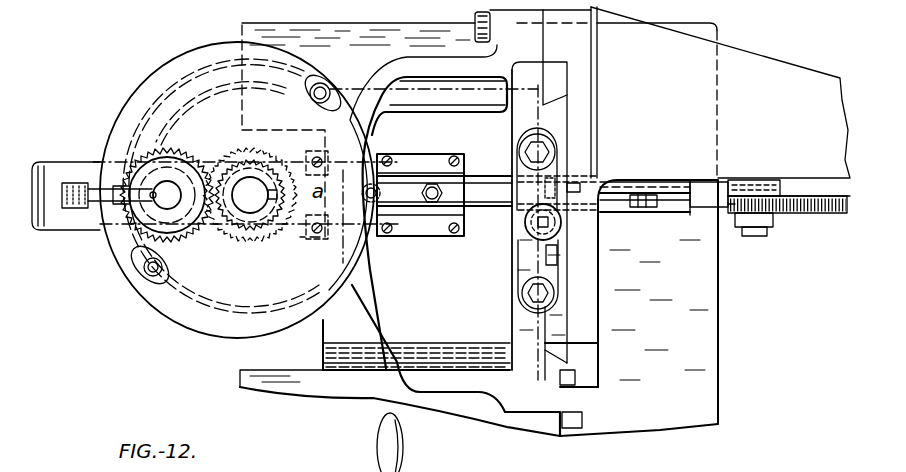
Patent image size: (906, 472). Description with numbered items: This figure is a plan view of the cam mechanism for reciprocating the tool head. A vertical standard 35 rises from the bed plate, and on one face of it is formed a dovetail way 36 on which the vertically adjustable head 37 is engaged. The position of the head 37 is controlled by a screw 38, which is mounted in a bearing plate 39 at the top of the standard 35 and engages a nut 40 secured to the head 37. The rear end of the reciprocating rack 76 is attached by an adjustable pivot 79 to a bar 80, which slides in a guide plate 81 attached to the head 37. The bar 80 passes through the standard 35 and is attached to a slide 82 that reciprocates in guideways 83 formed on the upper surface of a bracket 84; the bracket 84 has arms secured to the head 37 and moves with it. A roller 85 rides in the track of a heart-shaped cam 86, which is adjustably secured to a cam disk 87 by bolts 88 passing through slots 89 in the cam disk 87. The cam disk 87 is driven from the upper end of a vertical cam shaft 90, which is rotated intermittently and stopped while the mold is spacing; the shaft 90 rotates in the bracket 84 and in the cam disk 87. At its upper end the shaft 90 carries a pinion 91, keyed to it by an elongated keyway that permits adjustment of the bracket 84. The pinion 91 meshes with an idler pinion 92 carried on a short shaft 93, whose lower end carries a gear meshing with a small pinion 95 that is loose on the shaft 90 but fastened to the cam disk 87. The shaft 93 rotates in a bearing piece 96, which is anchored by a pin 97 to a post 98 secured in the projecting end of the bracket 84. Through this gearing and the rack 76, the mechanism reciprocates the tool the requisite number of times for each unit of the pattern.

The vertical standard 35 is at (560, 340).
The dovetail way 36 is at (560, 117).
The vertically adjustable head 37 is at (770, 73).
The screw 38 is at (558, 232).
The bearing plate 39 is at (560, 163).
The nut 40 is at (518, 238).
The reciprocating rack 76 is at (793, 218).
The adjustable pivot 79 is at (757, 237).
The bar 80 is at (708, 190).
The guide plate 81 is at (675, 220).
The slide 82 is at (414, 187).
The guideways 83 is at (395, 175).
The bracket 84 is at (393, 360).
The roller 85 is at (362, 242).
The heart-shaped cam 86 is at (207, 337).
The cam disk 87 is at (127, 110).
The bolts 88 is at (328, 88).
The slots 89 is at (322, 76).
The vertical cam shaft 90 is at (248, 182).
The pinion 91 is at (272, 157).
The idler pinion 92 is at (185, 170).
The short shaft 93 is at (173, 205).
The small pinion 95 is at (262, 240).
The bearing piece 96 is at (133, 232).
The pin 97 is at (98, 195).
The post 98 is at (70, 214).